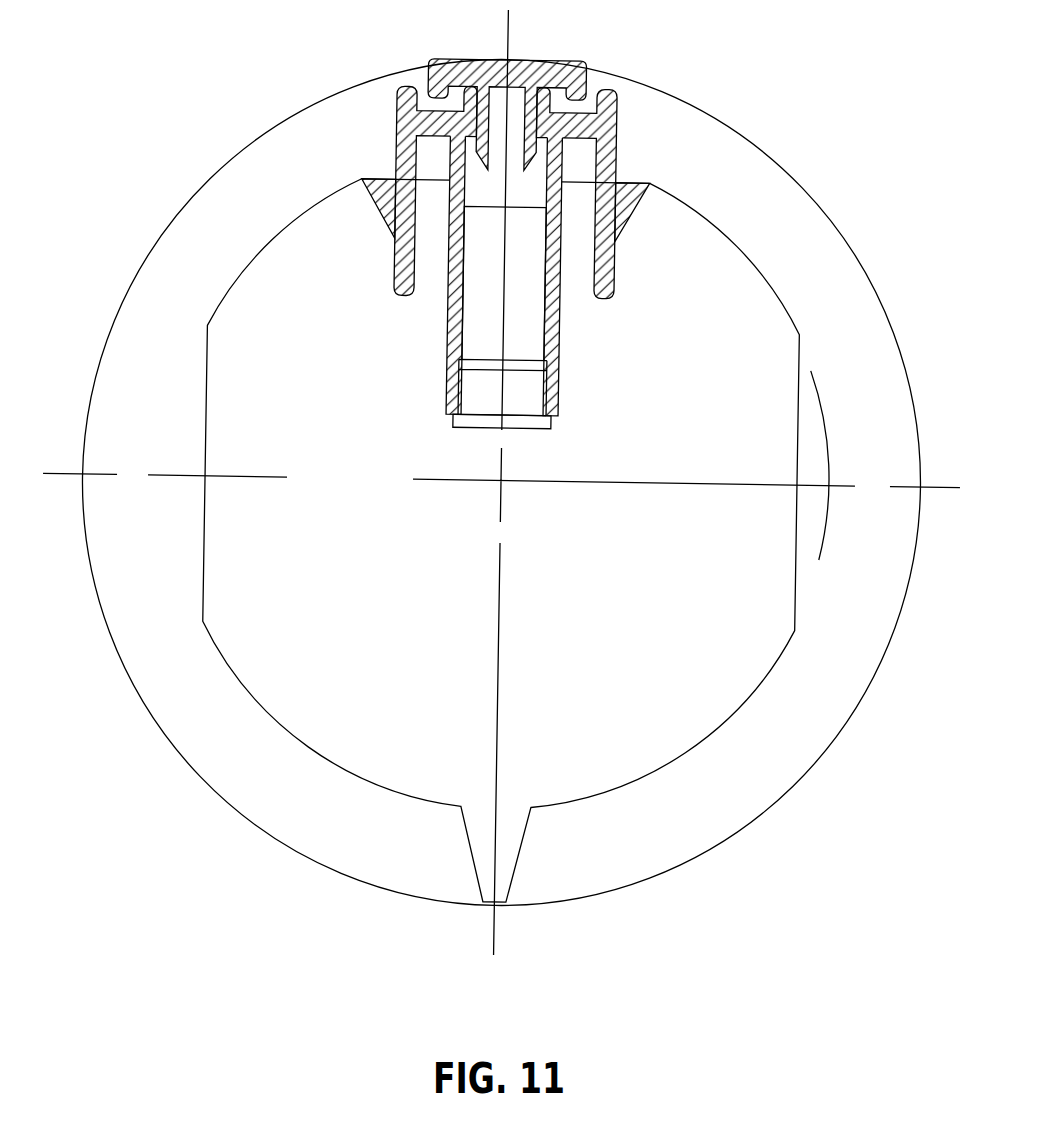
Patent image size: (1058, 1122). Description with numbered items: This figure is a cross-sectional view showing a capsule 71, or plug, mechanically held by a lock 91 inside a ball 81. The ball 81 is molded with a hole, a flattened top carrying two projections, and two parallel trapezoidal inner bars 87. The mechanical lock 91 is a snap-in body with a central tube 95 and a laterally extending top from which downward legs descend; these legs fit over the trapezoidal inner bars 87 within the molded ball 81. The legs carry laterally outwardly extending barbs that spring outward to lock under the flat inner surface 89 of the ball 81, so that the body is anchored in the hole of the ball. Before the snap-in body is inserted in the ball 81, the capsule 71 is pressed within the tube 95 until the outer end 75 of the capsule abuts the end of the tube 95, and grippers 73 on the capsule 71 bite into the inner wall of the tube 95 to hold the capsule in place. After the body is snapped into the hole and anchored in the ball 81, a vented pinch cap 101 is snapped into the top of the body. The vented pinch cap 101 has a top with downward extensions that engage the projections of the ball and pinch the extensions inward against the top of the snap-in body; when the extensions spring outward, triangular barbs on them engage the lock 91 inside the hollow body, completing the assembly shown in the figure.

The vented pinch cap 101 is at (536, 50).
The mechanical lock 91 is at (603, 60).
The ball 81 is at (830, 189).
The flat inner surface 89 is at (626, 202).
The trapezoidal inner bars 87 is at (568, 188).
The central tube 95 is at (444, 333).
The capsule 71 is at (553, 318).
The grippers 73 is at (528, 359).
The outer end 75 is at (533, 428).